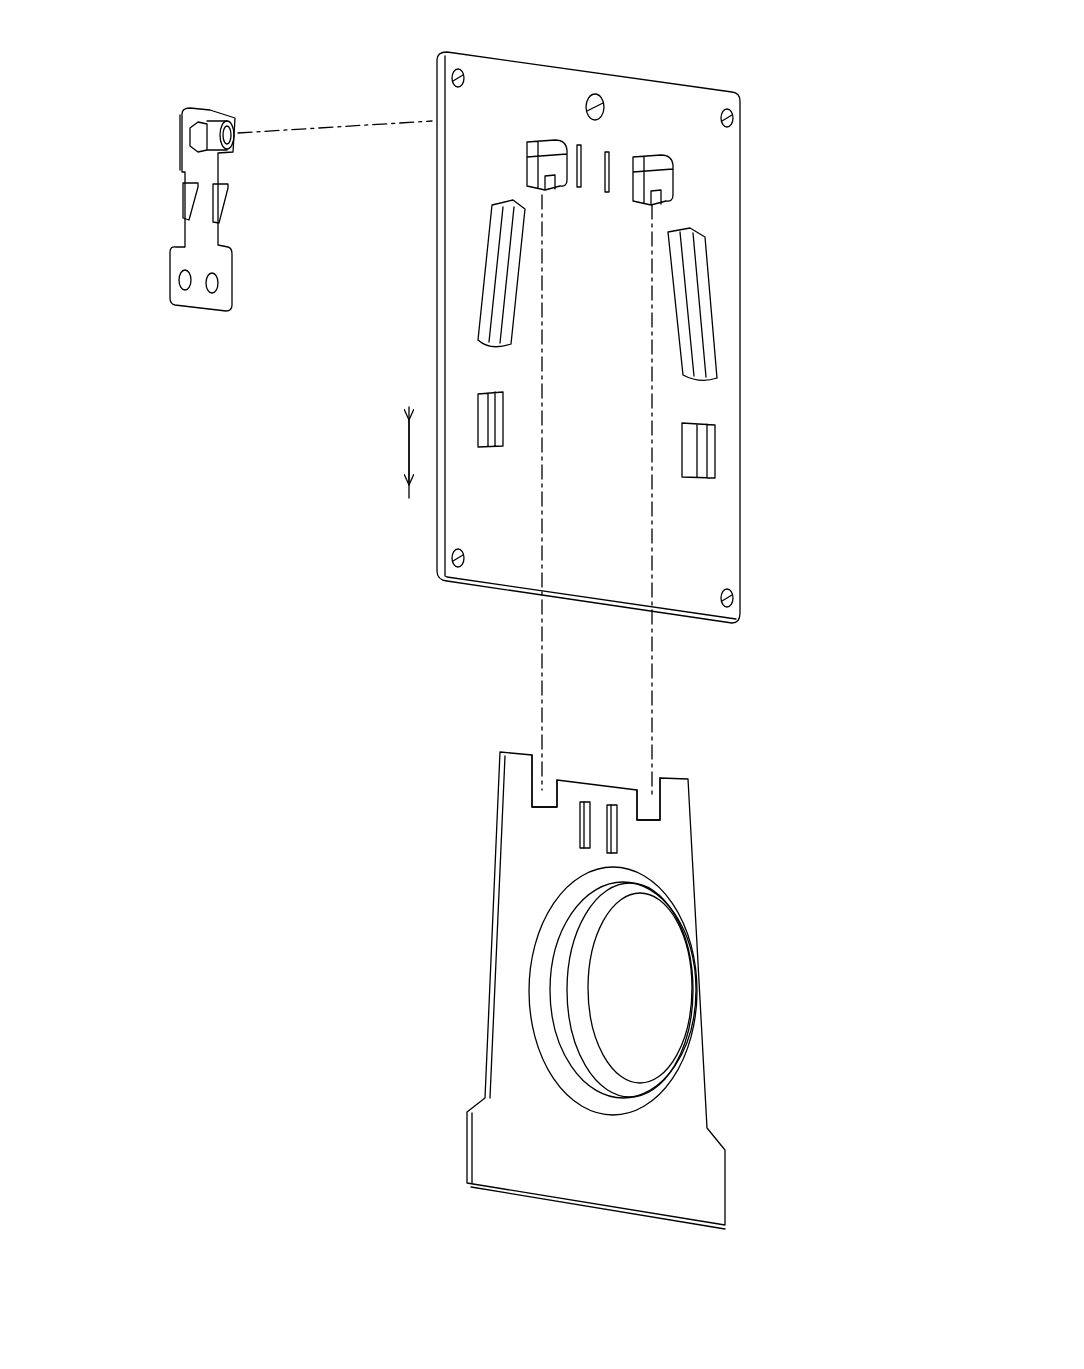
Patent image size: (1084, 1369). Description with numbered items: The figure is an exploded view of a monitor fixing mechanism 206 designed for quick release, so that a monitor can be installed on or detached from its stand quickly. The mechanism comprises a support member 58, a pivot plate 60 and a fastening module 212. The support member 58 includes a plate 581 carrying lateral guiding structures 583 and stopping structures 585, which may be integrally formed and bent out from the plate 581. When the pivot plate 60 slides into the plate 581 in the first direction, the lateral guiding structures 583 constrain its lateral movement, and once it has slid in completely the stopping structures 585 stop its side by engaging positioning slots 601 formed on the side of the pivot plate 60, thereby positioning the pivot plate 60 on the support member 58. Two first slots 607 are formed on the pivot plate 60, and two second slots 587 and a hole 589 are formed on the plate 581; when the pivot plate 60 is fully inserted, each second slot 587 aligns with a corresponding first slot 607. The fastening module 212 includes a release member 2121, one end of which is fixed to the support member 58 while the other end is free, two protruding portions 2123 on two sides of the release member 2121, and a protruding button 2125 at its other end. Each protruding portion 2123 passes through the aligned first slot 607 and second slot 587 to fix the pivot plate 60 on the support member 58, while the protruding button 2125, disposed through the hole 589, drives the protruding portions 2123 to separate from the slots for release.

The monitor fixing mechanism 206 is at (856, 574).
The support member 58 is at (782, 492).
The plate 581 is at (727, 388).
The lateral guiding structure 583 is at (500, 256).
The stopping structure 585 is at (553, 150).
The second slot 587 is at (574, 147).
The hole 589 is at (597, 98).
The pivot plate 60 is at (744, 1012).
The positioning slot 601 is at (530, 750).
The first slot 607 is at (577, 826).
The fastening module 212 is at (238, 318).
The release member 2121 is at (207, 240).
The protruding portion 2123 is at (188, 195).
The protruding button 2125 is at (234, 130).